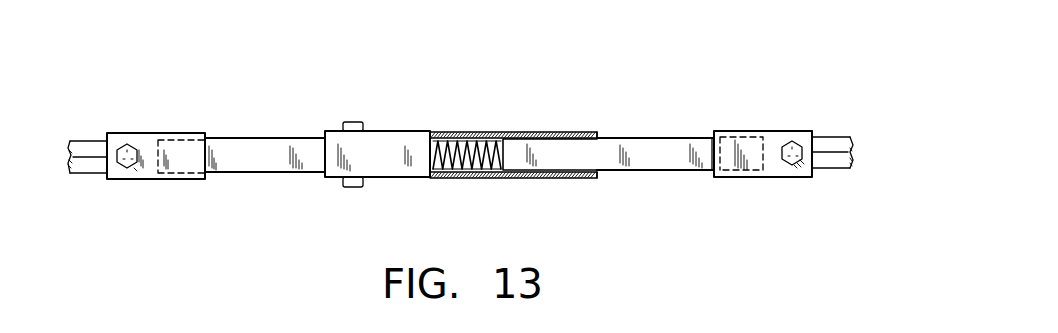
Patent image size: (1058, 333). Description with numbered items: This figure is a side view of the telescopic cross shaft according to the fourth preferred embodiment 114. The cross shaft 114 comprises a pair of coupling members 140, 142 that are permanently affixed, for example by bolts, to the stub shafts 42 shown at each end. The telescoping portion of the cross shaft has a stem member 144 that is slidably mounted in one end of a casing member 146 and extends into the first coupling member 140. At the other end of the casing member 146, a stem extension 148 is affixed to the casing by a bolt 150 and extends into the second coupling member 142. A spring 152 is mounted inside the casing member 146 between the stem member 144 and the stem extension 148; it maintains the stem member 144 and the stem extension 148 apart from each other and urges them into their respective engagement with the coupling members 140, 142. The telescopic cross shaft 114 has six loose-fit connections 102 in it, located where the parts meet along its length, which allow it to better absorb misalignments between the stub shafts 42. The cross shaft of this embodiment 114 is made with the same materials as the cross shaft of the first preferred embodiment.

The stub shaft 42 is at (85, 140).
The loose-fit connection 102 is at (603, 132).
The telescopic cross shaft of the fourth preferred embodiment 114 is at (647, 33).
The first coupling member 140 is at (760, 131).
The second coupling member 142 is at (165, 133).
The stem member 144 is at (650, 137).
The casing member 146 is at (556, 132).
The stem extension 148 is at (255, 138).
The bolt 150 is at (354, 122).
The spring 152 is at (470, 134).